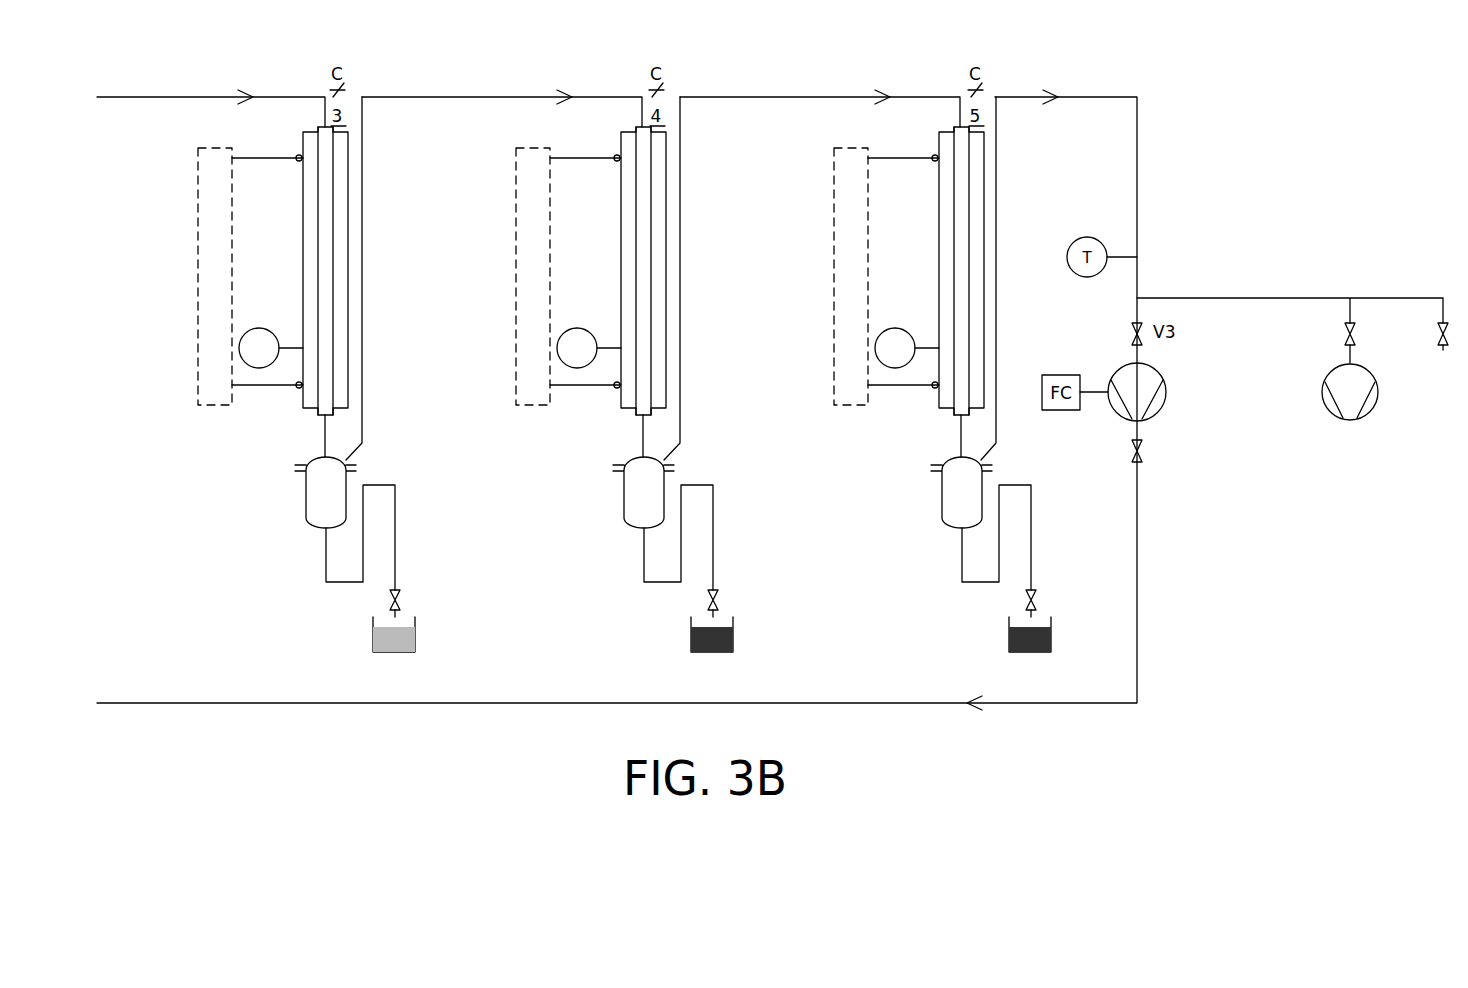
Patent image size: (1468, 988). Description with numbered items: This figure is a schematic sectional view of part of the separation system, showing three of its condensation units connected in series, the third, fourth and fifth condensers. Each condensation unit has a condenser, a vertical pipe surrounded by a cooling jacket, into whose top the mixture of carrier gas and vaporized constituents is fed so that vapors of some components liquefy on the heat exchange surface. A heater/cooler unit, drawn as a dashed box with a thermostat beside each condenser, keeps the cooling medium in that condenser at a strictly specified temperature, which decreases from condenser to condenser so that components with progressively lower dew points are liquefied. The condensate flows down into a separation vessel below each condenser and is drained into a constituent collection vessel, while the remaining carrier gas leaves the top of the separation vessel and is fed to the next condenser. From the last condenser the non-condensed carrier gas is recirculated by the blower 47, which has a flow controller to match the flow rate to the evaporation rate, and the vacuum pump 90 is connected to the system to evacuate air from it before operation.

The blower 47 is at (1150, 388).
The vacuum pump 90 is at (1352, 400).